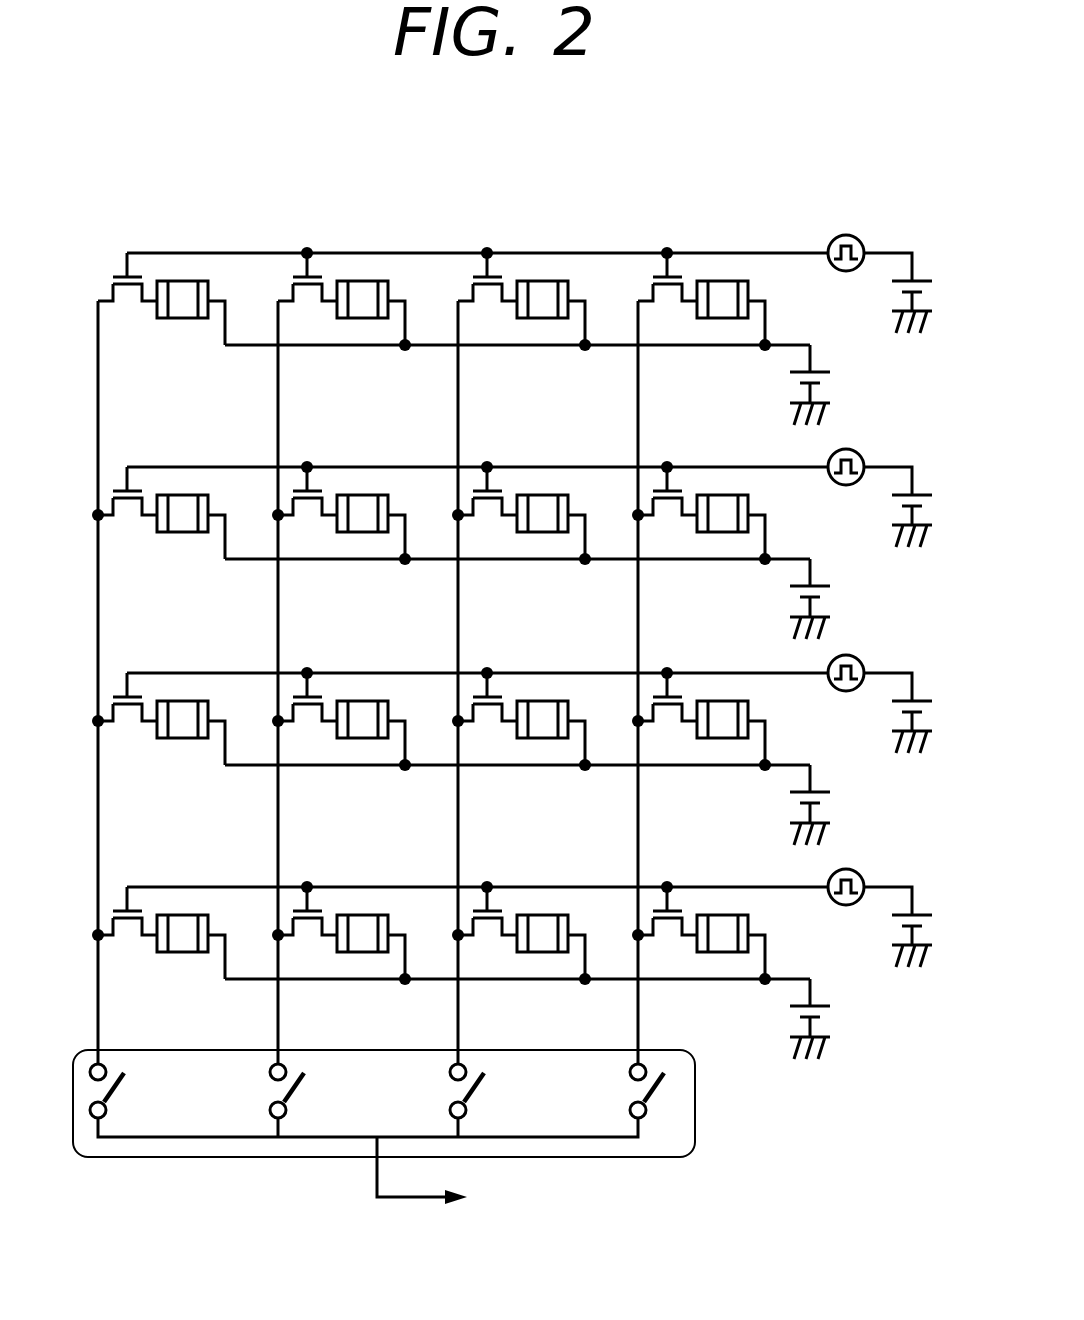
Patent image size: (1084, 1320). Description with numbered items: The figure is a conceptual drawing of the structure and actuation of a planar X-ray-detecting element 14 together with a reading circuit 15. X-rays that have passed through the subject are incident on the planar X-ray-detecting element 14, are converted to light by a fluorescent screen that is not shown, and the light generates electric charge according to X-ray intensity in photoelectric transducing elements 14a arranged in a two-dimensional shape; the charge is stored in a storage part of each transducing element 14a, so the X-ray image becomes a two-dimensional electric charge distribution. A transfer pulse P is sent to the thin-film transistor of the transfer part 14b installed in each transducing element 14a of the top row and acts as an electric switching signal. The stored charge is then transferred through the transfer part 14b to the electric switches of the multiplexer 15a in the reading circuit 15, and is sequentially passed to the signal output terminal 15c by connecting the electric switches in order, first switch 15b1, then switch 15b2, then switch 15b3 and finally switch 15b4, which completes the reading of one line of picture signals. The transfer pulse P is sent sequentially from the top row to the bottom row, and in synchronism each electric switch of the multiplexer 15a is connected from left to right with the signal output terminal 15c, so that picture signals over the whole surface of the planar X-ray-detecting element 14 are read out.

The planar X-ray-detecting element 14 is at (538, 244).
The photoelectric transducing element 14a is at (182, 292).
The transfer part 14b is at (127, 302).
The transfer pulse P is at (863, 579).
The reading circuit 15 is at (695, 1083).
The multiplexer 15a is at (682, 1103).
The electric switch 15b1 is at (117, 1092).
The electric switch 15b2 is at (297, 1092).
The electric switch 15b3 is at (477, 1093).
The electric switch 15b4 is at (653, 1093).
The signal output terminal 15c is at (415, 1200).